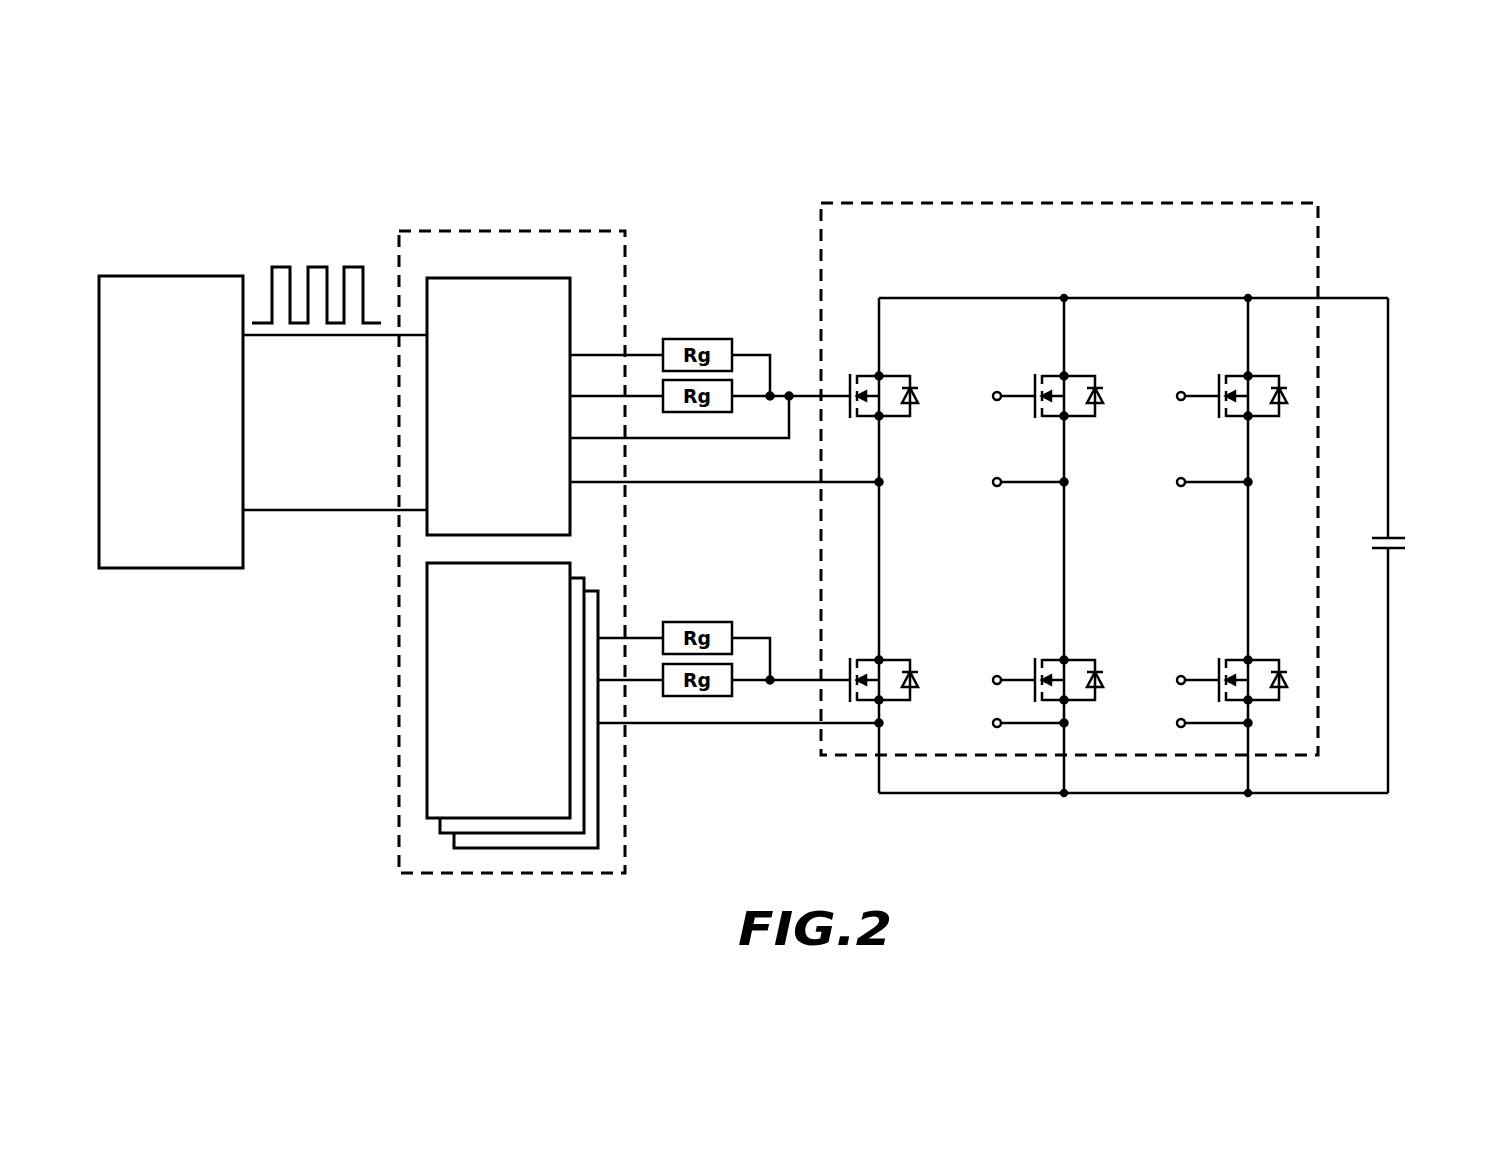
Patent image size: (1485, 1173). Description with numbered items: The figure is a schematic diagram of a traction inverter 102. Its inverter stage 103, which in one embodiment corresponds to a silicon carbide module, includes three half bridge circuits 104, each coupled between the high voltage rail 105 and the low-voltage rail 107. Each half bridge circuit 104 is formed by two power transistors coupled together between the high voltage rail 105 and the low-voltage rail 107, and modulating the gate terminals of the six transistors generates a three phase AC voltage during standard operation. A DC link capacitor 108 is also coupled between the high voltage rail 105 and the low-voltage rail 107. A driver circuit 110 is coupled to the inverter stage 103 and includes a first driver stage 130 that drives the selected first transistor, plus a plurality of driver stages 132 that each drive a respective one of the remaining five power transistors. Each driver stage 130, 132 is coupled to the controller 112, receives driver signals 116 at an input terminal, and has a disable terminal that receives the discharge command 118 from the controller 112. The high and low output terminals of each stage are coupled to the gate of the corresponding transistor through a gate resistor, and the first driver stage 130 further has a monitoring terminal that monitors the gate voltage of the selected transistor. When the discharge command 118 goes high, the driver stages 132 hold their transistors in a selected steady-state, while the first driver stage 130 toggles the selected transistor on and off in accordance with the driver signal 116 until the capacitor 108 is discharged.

The traction inverter 102 is at (1000, 142).
The inverter stage 103 is at (870, 202).
The half bridge circuit 104 is at (948, 372).
The high voltage rail 105 is at (1342, 298).
The low-voltage rail 107 is at (1340, 793).
The DC link capacitor 108 is at (1412, 526).
The driver circuit 110 is at (460, 230).
The controller 112 is at (156, 276).
The driver signal 116 is at (287, 335).
The discharge command 118 is at (287, 510).
The first driver stage 130 is at (557, 278).
The driver stages 132 is at (598, 591).